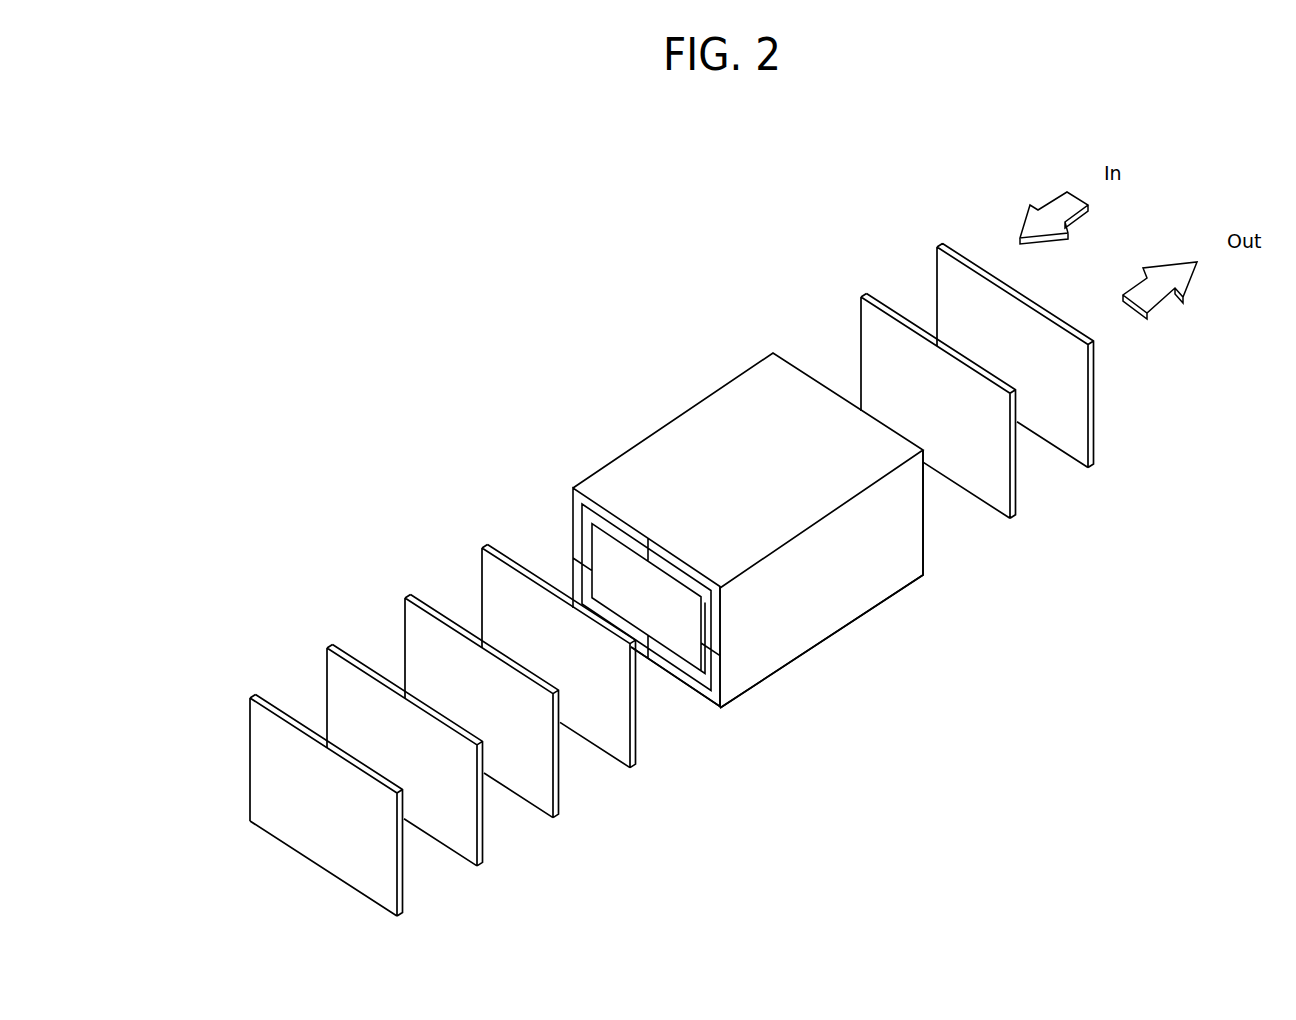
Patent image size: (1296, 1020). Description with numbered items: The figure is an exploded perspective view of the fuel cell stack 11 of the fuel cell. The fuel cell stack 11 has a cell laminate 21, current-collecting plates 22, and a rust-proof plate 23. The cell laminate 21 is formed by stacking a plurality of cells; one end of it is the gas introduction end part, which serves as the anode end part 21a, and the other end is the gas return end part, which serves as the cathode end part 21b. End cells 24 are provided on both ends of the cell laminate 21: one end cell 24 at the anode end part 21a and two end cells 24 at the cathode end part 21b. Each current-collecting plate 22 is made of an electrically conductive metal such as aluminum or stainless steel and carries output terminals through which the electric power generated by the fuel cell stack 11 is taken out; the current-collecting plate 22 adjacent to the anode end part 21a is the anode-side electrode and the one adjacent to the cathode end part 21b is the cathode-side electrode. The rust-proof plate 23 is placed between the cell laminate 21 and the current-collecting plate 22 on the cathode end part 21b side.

The fuel cell stack 11 is at (743, 273).
The cell laminate 21 is at (662, 468).
The anode end part 21a is at (927, 523).
The cathode end part 21b is at (695, 693).
The current-collecting plate 22 is at (250, 765).
The rust-proof plate 23 is at (325, 683).
The end cell 24 is at (403, 653).